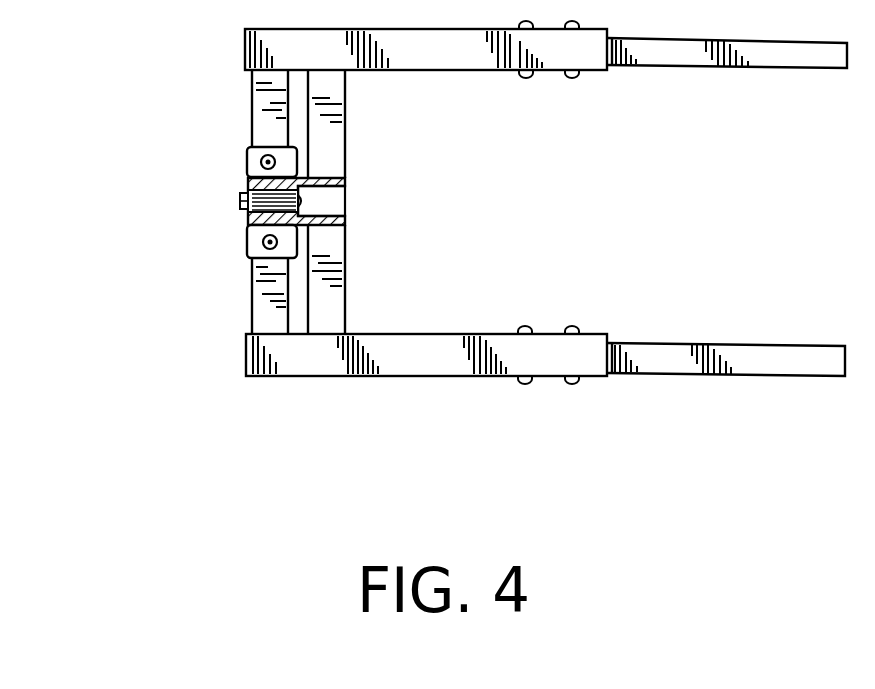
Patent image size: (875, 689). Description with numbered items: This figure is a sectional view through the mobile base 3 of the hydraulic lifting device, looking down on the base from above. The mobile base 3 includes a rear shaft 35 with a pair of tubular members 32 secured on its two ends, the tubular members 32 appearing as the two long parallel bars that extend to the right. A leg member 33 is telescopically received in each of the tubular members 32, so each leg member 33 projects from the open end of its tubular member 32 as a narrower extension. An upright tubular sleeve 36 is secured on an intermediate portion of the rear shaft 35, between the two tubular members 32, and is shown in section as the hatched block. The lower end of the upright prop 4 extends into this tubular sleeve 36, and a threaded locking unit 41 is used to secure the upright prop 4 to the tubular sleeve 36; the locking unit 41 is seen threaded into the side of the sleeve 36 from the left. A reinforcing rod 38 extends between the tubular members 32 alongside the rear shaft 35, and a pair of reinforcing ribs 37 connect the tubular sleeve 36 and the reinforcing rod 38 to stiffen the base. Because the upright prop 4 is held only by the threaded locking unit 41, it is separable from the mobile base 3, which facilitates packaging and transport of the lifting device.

The mobile base 3 is at (381, 384).
The tubular members 32 is at (463, 377).
The leg member 33 is at (682, 362).
The rear shaft 35 is at (260, 270).
The upright tubular sleeve 36 is at (245, 180).
The reinforcing ribs 37 is at (308, 173).
The reinforcing rod 38 is at (320, 288).
The upright prop 4 is at (243, 183).
The threaded locking unit 41 is at (243, 200).